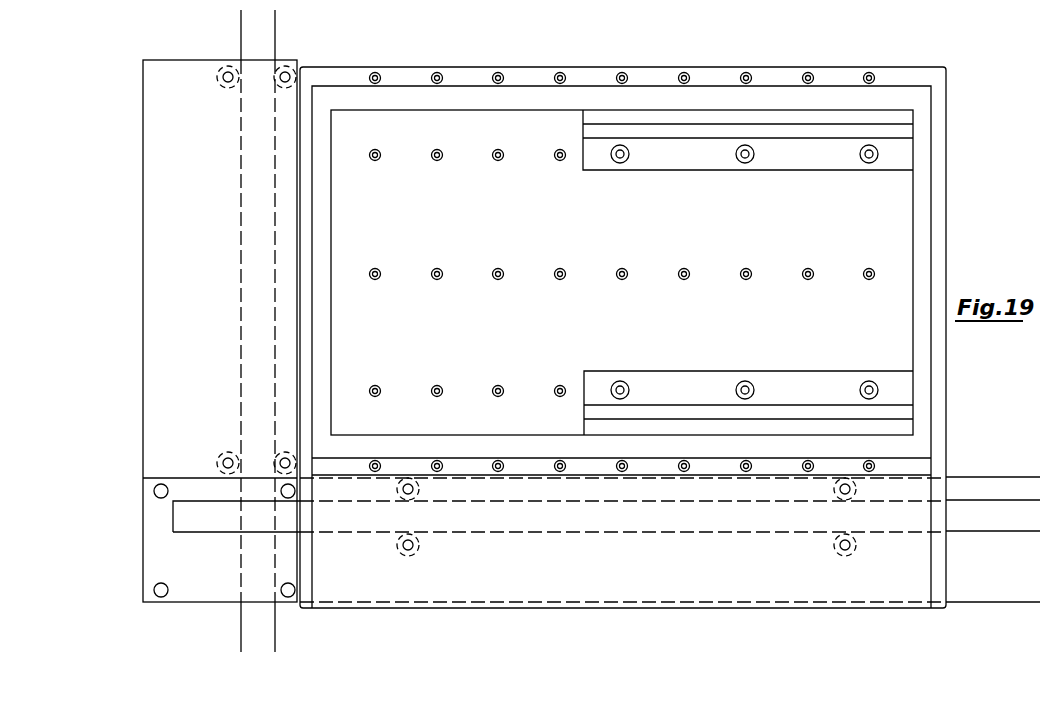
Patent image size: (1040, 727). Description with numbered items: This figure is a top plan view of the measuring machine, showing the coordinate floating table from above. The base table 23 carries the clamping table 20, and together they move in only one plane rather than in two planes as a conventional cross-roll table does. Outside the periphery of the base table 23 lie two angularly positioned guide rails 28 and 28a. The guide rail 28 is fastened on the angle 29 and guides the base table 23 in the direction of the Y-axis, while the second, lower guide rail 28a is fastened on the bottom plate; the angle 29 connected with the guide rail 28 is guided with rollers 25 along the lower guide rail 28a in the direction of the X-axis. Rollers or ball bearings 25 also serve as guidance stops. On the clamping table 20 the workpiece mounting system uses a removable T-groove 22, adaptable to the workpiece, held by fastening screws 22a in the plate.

The clamping table 20 is at (896, 305).
The removable T-groove 22 is at (706, 153).
The fastening screws of plate 22a is at (620, 276).
The base table 23 is at (937, 232).
The rollers or ball bearings 25 is at (226, 88).
The guide rail 28 is at (208, 517).
The guide rail 28a is at (253, 282).
The angle 29 is at (186, 578).